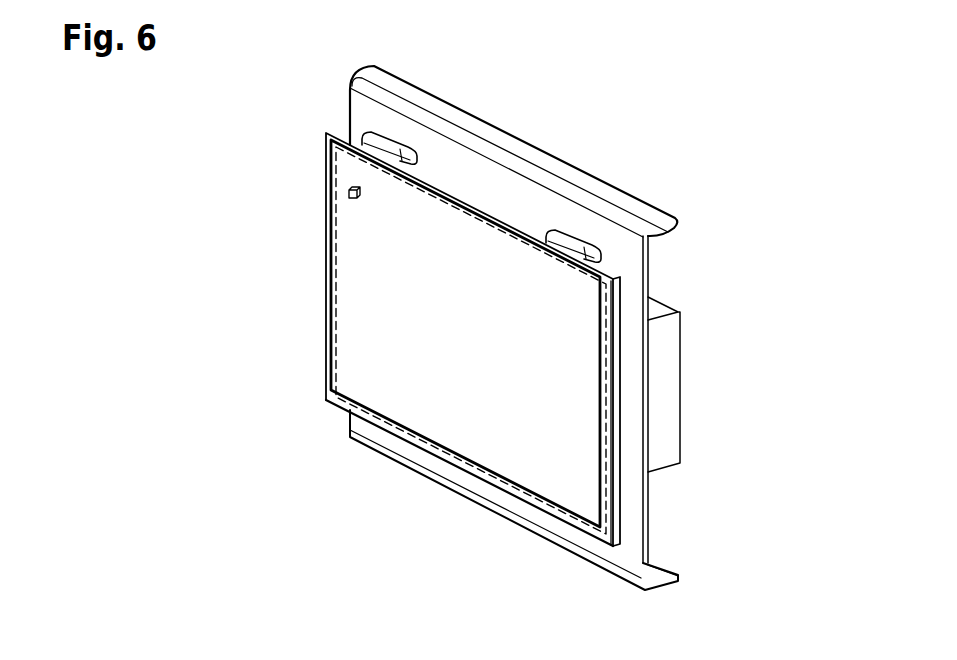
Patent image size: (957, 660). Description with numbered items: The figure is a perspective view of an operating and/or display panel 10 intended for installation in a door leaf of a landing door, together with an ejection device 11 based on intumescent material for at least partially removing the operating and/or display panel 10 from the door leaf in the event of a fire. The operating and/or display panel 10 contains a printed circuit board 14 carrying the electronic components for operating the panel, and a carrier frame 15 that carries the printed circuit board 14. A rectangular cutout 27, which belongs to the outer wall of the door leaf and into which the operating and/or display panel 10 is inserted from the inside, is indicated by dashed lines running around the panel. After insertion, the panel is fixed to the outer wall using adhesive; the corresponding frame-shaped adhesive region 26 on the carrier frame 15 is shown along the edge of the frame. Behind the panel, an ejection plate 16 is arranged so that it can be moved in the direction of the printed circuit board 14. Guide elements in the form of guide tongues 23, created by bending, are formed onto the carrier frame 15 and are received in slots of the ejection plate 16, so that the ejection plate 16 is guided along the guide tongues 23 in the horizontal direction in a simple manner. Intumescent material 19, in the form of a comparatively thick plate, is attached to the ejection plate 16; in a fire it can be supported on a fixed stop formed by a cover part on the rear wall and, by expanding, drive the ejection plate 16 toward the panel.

The operating and/or display panel 10 is at (301, 110).
The ejection device 11 is at (682, 338).
The printed circuit board 14 is at (578, 490).
The carrier frame 15 is at (607, 540).
The ejection plate 16 is at (631, 265).
The intumescent material 19 is at (668, 387).
The guide tongues 23 is at (578, 237).
The adhesive region 26 is at (612, 537).
The cutout 27 is at (340, 408).